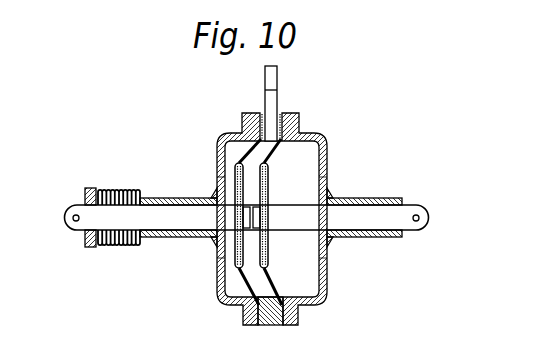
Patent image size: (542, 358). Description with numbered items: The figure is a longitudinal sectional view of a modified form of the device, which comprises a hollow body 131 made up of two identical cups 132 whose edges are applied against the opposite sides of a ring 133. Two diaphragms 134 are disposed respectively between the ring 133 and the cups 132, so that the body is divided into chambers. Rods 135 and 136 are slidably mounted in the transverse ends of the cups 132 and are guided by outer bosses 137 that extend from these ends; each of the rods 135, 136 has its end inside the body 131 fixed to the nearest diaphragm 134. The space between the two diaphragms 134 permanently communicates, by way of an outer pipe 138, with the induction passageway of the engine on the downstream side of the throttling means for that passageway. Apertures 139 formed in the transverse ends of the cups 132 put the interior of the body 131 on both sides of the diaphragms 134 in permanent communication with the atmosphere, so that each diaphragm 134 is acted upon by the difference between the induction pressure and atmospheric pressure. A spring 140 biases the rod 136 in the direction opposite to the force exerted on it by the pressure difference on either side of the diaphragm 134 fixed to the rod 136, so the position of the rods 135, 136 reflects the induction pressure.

The hollow body 131 is at (327, 130).
The cups 132 is at (217, 151).
The ring 133 is at (272, 325).
The diaphragms 134 is at (236, 141).
The rod 135 is at (375, 222).
The rod 136 is at (163, 220).
The outer bosses 137 is at (198, 248).
The outer pipe 138 is at (278, 94).
The apertures 139 is at (221, 178).
The spring 140 is at (113, 248).